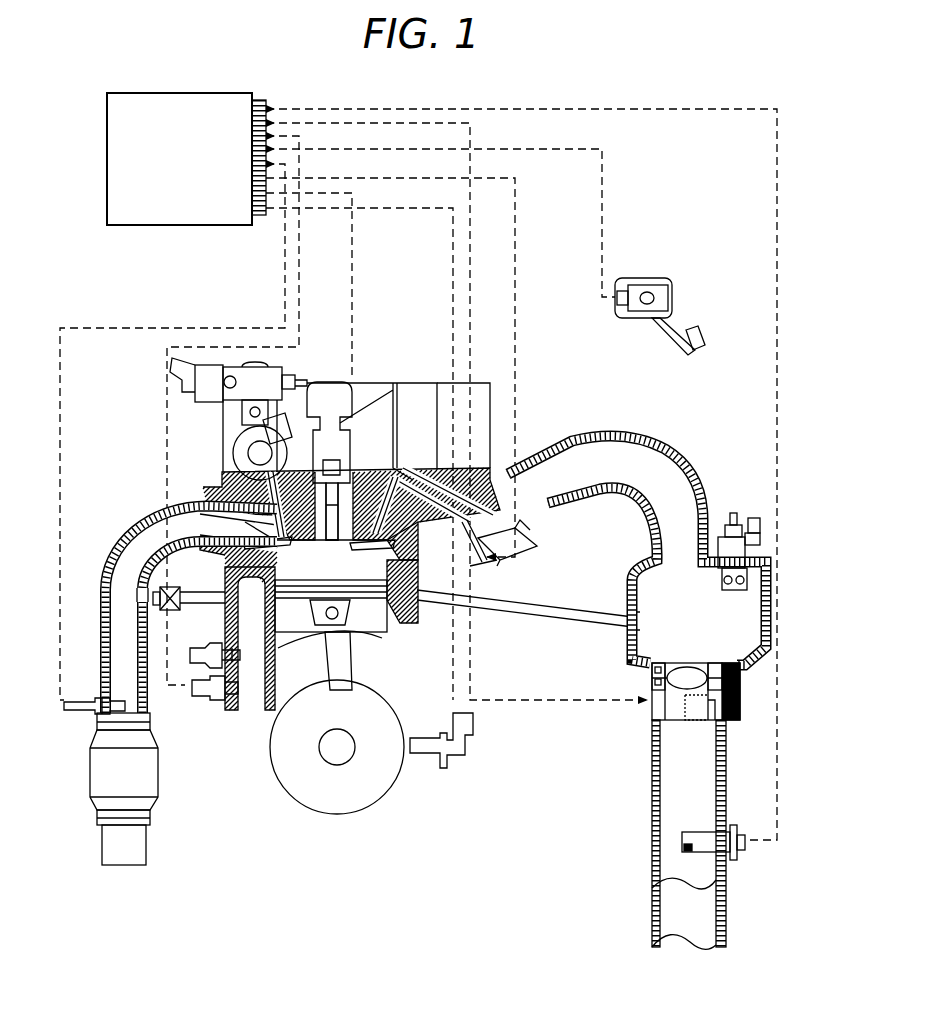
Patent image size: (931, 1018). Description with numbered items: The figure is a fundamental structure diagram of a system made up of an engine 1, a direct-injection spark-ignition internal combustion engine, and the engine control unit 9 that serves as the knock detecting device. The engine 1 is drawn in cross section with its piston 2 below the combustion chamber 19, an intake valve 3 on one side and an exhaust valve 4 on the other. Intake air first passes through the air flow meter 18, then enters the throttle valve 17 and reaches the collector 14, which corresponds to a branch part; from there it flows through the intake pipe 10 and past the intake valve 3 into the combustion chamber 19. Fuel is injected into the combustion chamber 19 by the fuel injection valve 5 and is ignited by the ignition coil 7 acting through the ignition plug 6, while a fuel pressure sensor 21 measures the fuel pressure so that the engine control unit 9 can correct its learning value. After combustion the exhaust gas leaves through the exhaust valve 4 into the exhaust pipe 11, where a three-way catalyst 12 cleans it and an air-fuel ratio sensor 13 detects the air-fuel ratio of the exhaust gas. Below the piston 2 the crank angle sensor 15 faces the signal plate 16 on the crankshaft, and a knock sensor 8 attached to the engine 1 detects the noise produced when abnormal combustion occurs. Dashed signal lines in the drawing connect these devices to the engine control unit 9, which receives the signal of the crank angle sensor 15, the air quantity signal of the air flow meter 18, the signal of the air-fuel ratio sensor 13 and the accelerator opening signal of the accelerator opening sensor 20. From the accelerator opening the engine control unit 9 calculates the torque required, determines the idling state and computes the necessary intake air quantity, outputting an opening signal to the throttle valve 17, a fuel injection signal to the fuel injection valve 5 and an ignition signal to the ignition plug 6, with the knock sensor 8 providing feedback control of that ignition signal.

The engine 1 is at (415, 597).
The piston 2 is at (373, 637).
The intake valve 3 is at (373, 480).
The exhaust valve 4 is at (290, 542).
The fuel injection valve 5 is at (478, 572).
The ignition plug 6 is at (330, 532).
The ignition coil 7 is at (327, 387).
The knock sensor 8 is at (208, 700).
The engine control unit 9 is at (178, 208).
The intake pipe 10 is at (460, 450).
The exhaust pipe 11 is at (123, 533).
The three-way catalyst 12 is at (150, 782).
The air-fuel ratio sensor 13 is at (82, 714).
The collector 14 is at (640, 593).
The crank angle sensor 15 is at (460, 747).
The signal plate 16 is at (388, 775).
The throttle valve 17 is at (745, 715).
The air flow meter 18 is at (745, 850).
The combustion chamber 19 is at (363, 610).
The accelerator opening sensor 20 is at (655, 278).
The fuel pressure sensor 21 is at (532, 553).